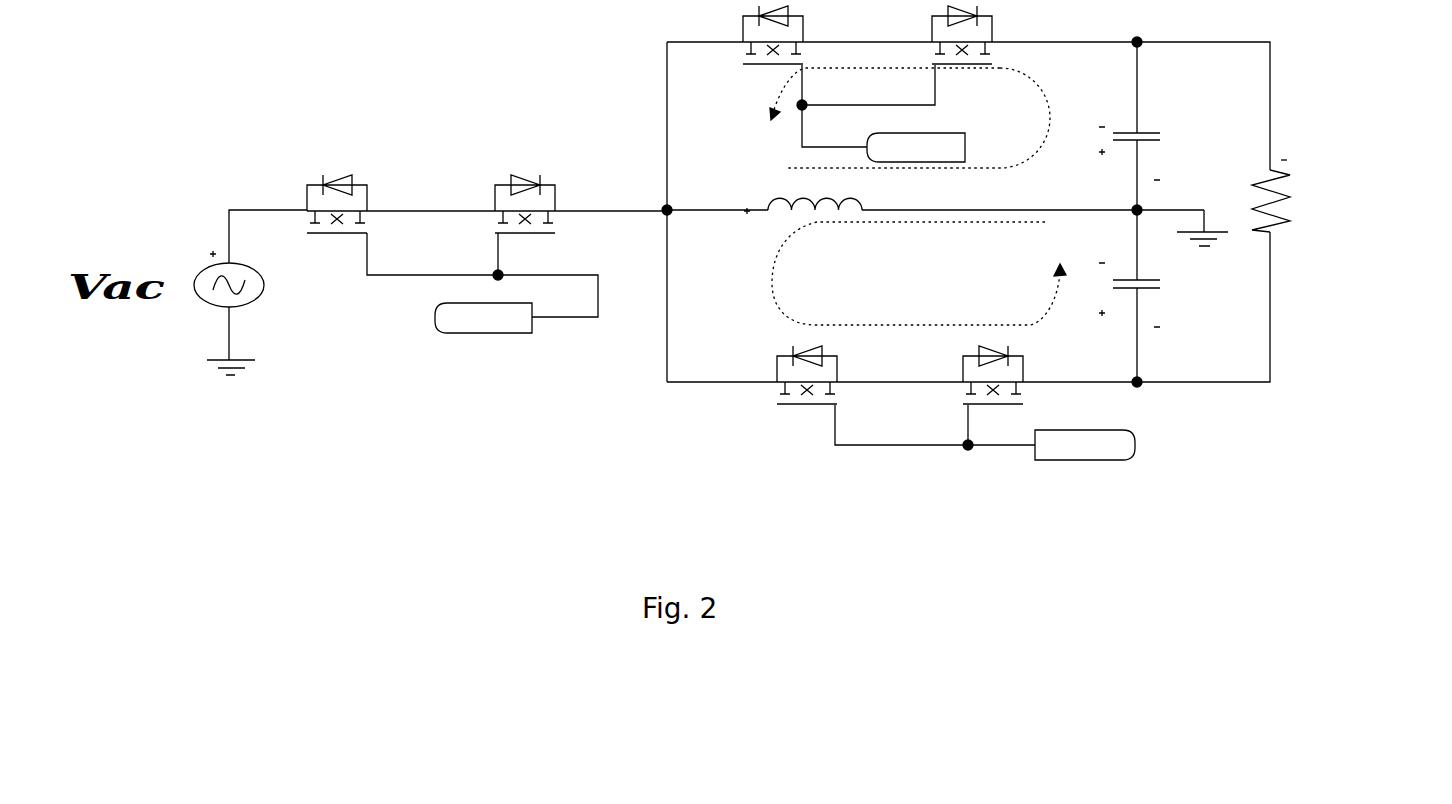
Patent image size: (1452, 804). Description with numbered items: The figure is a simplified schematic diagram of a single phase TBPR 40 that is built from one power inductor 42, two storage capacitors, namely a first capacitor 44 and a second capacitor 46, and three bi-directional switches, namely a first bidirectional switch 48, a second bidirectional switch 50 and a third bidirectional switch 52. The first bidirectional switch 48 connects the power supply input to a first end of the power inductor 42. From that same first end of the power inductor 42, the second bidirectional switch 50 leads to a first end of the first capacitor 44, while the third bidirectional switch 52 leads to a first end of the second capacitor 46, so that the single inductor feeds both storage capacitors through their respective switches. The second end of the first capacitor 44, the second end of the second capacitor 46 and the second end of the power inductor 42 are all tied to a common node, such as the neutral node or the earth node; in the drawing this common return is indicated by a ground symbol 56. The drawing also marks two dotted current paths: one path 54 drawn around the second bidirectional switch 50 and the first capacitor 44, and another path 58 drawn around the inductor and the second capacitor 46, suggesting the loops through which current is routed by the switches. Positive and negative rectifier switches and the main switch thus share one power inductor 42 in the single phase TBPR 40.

The single phase TBPR 40 is at (500, 98).
The power inductor 42 is at (823, 209).
The first capacitor 44 is at (1231, 147).
The second capacitor 46 is at (1231, 295).
The first bidirectional switch 48 is at (453, 288).
The second bidirectional switch 50 is at (916, 133).
The third bidirectional switch 52 is at (1022, 454).
The positive current path 54 is at (770, 100).
The ground 56 is at (1220, 221).
The negative current path 58 is at (1033, 320).